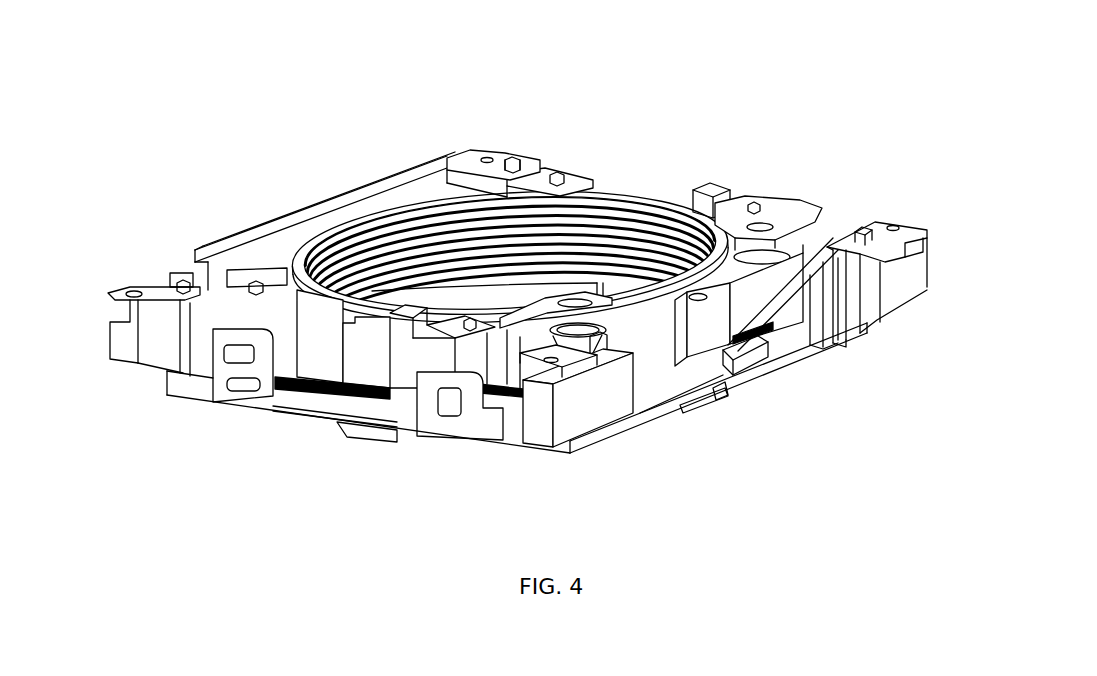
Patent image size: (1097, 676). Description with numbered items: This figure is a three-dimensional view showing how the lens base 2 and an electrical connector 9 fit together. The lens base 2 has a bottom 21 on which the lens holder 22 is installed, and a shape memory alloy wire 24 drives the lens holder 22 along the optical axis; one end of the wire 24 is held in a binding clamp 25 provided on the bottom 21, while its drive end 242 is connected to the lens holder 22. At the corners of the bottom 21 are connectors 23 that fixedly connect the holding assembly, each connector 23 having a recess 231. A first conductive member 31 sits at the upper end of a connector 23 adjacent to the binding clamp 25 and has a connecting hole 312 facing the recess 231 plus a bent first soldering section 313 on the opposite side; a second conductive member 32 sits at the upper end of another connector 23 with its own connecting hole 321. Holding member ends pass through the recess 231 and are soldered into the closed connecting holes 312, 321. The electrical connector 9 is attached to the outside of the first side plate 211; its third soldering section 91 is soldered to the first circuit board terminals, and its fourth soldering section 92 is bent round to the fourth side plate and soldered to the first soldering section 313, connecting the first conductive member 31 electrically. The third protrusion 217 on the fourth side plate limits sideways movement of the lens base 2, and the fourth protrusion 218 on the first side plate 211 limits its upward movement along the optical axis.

The lens base 2 is at (567, 61).
The electrical connector 9 is at (363, 413).
The bottom 21 is at (257, 230).
The lens holder 22 is at (394, 216).
The connector 23 is at (897, 282).
The shape memory alloy wire 24 is at (797, 345).
The binding clamp 25 is at (848, 232).
The first conductive member 31 is at (570, 357).
The second conductive member 32 is at (490, 165).
The third soldering section 91 is at (237, 399).
The fourth soldering section 92 is at (840, 345).
The first side plate 211 is at (417, 365).
The third protrusion 217 is at (743, 377).
The fourth protrusion 218 is at (727, 185).
The recess 231 is at (550, 397).
The drive end 242 is at (722, 392).
The connecting hole 312 is at (900, 224).
The first soldering section 313 is at (833, 337).
The connecting hole 321 is at (123, 287).